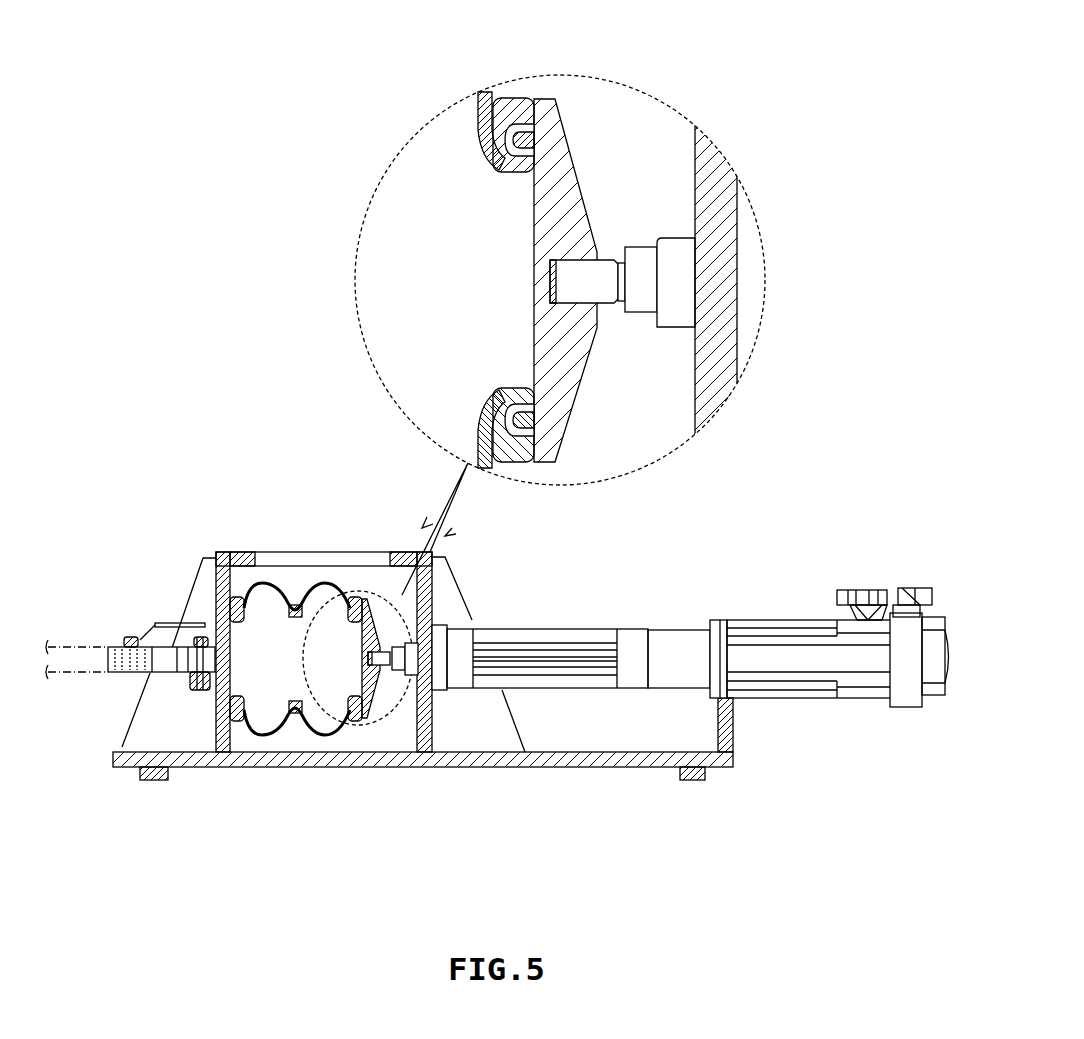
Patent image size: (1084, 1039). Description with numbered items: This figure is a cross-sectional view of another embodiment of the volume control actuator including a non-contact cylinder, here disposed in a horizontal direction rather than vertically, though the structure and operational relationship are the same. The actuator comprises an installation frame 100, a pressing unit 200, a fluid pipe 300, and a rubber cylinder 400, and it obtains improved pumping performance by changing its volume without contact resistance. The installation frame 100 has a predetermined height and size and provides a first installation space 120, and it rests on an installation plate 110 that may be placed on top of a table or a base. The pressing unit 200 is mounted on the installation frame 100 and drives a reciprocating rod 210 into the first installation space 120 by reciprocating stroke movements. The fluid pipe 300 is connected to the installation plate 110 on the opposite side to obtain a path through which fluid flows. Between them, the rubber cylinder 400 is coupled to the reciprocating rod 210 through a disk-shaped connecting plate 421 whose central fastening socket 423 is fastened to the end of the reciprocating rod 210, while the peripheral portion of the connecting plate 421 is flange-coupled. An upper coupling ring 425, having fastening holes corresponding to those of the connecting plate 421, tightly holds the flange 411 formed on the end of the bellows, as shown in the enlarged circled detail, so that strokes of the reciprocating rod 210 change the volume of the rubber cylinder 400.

The installation frame 100 is at (273, 525).
The installation plate 110 is at (235, 768).
The first installation space 120 is at (383, 737).
The pressing unit 200 is at (770, 591).
The reciprocating rod 210 is at (598, 292).
The fluid pipe 300 is at (97, 647).
The rubber cylinder 400 is at (290, 745).
The flange 411 is at (500, 162).
The connecting plate 421 is at (566, 178).
The fastening socket 423 is at (553, 292).
The upper coupling ring 425 is at (505, 90).